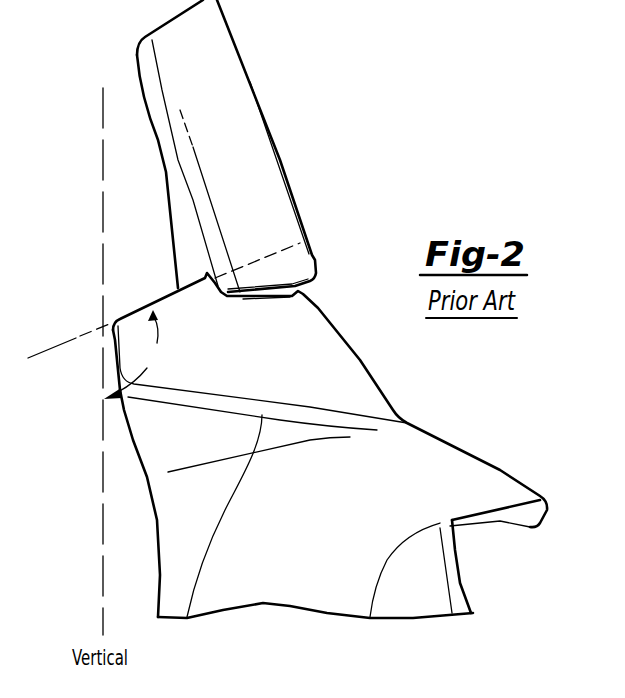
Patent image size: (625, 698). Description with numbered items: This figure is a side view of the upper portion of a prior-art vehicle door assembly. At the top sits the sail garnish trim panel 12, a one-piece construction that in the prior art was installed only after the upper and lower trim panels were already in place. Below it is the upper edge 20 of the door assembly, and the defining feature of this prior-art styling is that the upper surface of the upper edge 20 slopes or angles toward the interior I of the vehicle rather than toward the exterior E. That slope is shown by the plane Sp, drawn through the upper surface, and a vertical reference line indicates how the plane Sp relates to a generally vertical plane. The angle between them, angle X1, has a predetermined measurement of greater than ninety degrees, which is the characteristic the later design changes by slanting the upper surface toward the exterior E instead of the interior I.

The sail garnish trim panel 12 is at (176, 177).
The upper edge 20 is at (246, 348).
The plane Sp is at (300, 243).
The angle X1 is at (133, 354).
The interior I is at (80, 408).
The exterior E is at (533, 430).